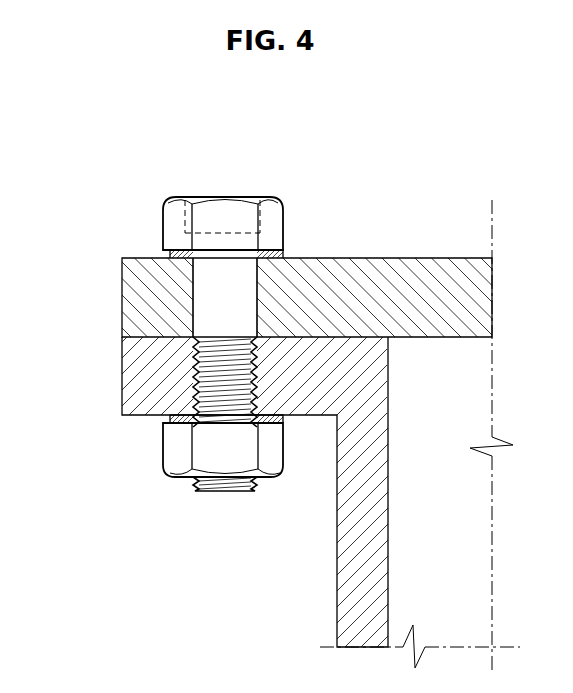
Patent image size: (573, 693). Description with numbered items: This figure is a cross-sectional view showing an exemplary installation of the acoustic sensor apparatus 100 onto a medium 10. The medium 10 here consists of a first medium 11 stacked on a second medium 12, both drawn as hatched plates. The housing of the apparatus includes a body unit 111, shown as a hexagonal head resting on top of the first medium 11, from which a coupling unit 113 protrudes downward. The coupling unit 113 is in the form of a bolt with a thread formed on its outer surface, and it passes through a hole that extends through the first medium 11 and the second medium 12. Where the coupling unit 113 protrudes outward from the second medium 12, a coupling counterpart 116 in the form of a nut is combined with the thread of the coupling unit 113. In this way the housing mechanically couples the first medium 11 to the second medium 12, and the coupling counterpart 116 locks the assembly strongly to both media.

The acoustic sensor apparatus 100 is at (224, 324).
The body unit 111 is at (284, 228).
The coupling unit 113 is at (215, 493).
The coupling counterpart 116 is at (172, 443).
The medium 10 is at (253, 452).
The first medium 11 is at (122, 314).
The second medium 12 is at (224, 492).